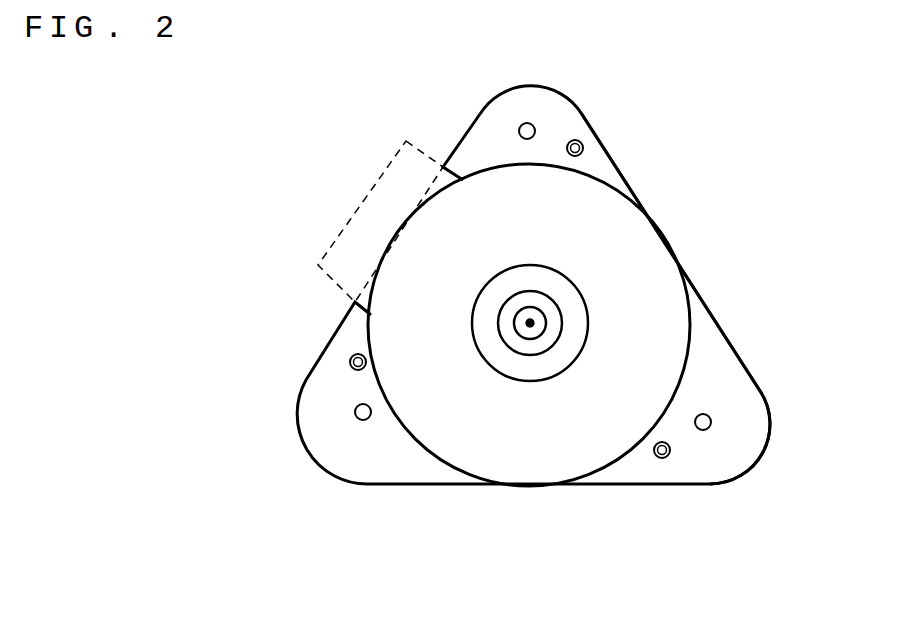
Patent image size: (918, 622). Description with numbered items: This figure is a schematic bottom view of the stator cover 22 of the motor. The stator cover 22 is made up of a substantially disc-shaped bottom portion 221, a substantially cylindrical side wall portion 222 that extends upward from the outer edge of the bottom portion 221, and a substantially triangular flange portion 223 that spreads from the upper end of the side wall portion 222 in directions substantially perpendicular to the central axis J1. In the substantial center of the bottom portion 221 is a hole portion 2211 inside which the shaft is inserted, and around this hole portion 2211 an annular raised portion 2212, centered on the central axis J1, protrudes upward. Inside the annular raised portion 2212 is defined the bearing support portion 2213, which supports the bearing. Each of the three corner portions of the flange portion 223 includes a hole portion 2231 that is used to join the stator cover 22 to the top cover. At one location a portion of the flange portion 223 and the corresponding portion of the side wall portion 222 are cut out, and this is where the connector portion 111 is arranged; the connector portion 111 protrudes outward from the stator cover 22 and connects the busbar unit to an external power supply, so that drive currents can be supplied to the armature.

The stator cover 22 is at (250, 84).
The bottom portion 221 is at (433, 415).
The hole portion 2211 is at (528, 337).
The annular raised portion 2212 is at (568, 352).
The bearing support portion 2213 is at (540, 347).
The side wall portion 222 is at (645, 204).
The flange portion 223 is at (708, 360).
The hole portion 2231 is at (576, 140).
The connector portion 111 is at (338, 230).
The central axis J1 is at (535, 321).